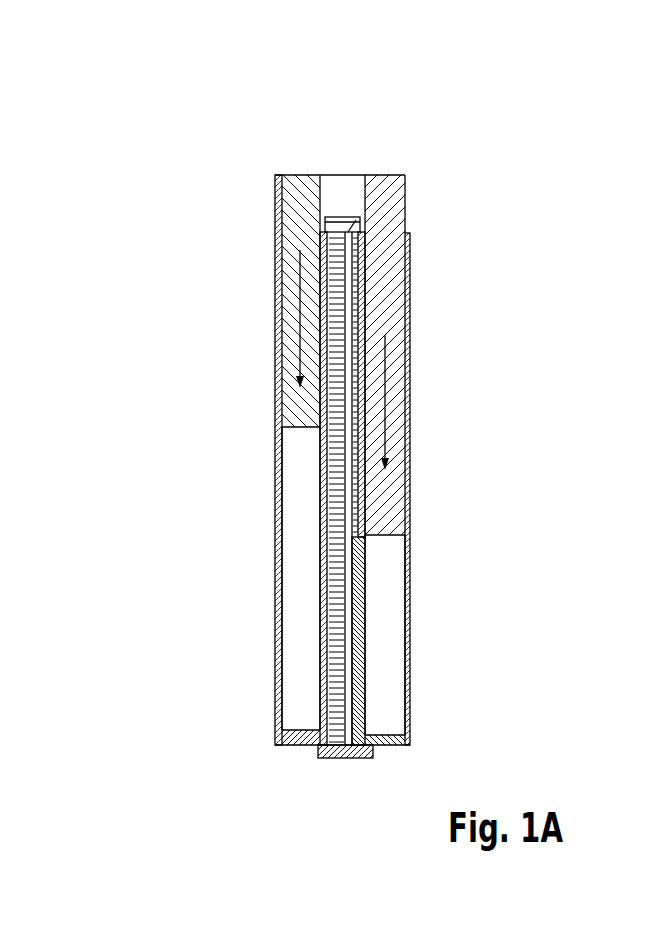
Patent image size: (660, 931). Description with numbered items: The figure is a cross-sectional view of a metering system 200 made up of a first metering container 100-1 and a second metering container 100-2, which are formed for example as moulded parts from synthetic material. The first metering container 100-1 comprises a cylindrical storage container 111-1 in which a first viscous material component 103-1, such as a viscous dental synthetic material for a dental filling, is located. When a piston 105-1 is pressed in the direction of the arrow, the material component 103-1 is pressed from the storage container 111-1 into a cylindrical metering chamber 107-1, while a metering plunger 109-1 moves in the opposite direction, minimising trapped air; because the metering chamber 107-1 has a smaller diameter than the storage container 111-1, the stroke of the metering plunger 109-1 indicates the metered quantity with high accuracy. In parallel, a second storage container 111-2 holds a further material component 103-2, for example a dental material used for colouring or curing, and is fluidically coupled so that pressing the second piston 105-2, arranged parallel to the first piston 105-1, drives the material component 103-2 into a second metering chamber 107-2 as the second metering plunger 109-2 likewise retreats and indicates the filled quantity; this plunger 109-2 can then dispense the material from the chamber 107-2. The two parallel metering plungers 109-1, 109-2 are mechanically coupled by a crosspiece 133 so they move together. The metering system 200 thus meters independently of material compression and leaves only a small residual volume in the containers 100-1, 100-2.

The metering system 200 is at (210, 177).
The crosspiece 133 is at (346, 217).
The first metering container 100-1 is at (452, 489).
The second metering container 100-2 is at (240, 430).
The first viscous material component 103-1 is at (388, 688).
The second viscous material component 103-2 is at (305, 582).
The first piston 105-1 is at (386, 398).
The second piston 105-2 is at (292, 402).
The first metering chamber 107-1 is at (355, 603).
The second metering chamber 107-2 is at (322, 660).
The first metering plunger 109-1 is at (350, 270).
The second metering plunger 109-2 is at (300, 305).
The first storage container 111-1 is at (388, 567).
The second storage container 111-2 is at (305, 487).